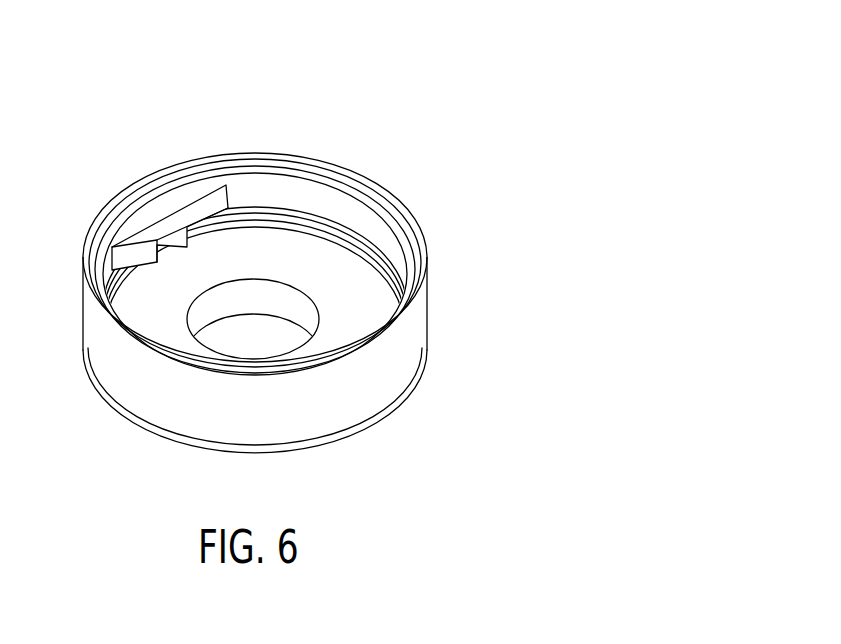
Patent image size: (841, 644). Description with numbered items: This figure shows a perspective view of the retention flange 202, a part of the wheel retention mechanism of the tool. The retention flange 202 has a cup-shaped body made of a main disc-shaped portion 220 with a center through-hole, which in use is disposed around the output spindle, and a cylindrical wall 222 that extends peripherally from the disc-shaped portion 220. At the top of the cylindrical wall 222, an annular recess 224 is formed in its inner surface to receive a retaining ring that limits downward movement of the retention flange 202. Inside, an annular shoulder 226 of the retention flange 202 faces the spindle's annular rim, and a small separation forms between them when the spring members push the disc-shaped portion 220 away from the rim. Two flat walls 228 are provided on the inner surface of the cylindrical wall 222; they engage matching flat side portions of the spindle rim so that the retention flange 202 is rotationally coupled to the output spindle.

The retention flange 202 is at (432, 97).
The disc-shaped portion 220 is at (367, 313).
The cylindrical wall 222 is at (421, 249).
The annular recess 224 is at (313, 175).
The annular shoulder 226 is at (345, 227).
The flat wall 228 is at (190, 208).